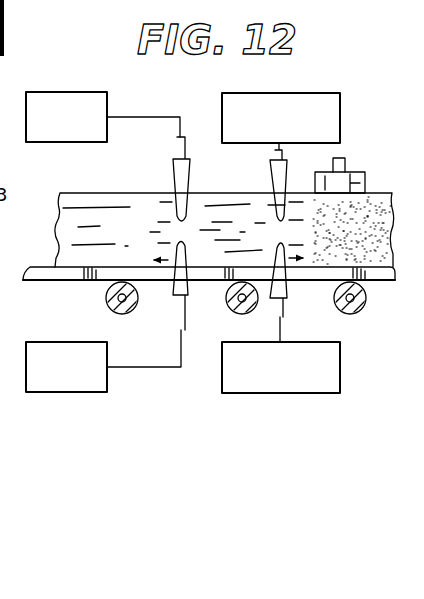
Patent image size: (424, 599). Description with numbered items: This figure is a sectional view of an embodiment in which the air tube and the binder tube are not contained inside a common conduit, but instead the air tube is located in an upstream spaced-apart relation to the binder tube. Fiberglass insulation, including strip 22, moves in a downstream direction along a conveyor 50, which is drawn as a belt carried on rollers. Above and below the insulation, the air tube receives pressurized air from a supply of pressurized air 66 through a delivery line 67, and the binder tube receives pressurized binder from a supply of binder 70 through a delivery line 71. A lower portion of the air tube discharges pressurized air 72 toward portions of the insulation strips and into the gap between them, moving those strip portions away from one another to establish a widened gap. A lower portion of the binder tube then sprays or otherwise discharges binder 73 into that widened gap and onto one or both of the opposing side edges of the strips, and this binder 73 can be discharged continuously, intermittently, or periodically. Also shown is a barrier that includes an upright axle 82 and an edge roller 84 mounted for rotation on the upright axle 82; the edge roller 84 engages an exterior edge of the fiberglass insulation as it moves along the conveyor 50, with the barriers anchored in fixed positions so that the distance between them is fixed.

The strip 22 is at (81, 193).
The conveyor 50 is at (57, 285).
The supply of pressurized air 66 is at (80, 92).
The delivery line 67 is at (138, 117).
The supply of binder 70 is at (305, 97).
The delivery line 71 is at (279, 143).
The pressurized air 72 is at (161, 191).
The binder 73 is at (300, 191).
The upright axle 82 is at (346, 157).
The edge roller 84 is at (359, 182).